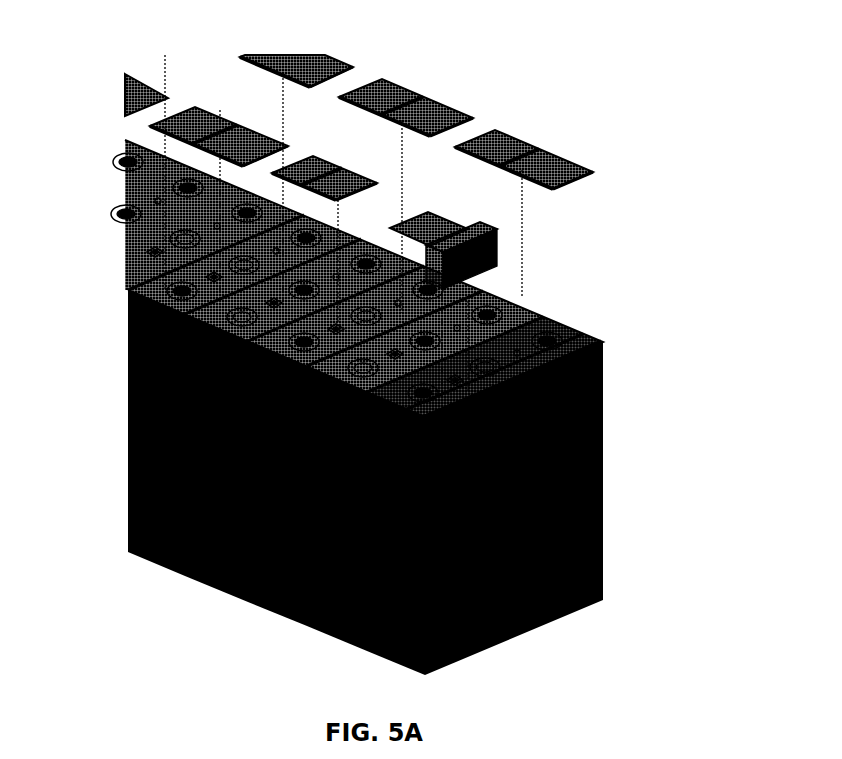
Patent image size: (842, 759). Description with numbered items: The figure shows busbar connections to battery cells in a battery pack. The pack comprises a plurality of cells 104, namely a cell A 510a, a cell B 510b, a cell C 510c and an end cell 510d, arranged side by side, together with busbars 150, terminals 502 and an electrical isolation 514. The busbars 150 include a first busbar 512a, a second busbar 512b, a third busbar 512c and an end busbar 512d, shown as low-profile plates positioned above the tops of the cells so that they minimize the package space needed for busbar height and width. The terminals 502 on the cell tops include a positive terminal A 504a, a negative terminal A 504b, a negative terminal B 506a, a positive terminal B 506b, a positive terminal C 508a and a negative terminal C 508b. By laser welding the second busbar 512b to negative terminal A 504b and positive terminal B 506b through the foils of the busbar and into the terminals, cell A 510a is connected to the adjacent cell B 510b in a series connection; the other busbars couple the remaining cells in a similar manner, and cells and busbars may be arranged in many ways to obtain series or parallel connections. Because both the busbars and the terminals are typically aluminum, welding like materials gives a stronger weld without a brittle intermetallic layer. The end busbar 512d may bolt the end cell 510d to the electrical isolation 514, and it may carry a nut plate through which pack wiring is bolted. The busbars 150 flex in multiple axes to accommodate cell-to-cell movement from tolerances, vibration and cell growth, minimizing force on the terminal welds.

The cells 104 is at (365, 374).
The busbars 150 is at (160, 118).
The terminals 502 is at (128, 296).
The positive terminal A 504a is at (463, 242).
The negative terminal A 504b is at (350, 372).
The negative terminal B 506a is at (435, 280).
The positive terminal B 506b is at (290, 343).
The positive terminal C 508a is at (382, 258).
The negative terminal C 508b is at (228, 314).
The cell A 510a is at (340, 630).
The cell B 510b is at (277, 600).
The cell C 510c is at (190, 588).
The end cell 510d is at (553, 327).
The busbar 1 512a is at (538, 152).
The busbar 2 512b is at (300, 173).
The busbar 3 512c is at (422, 98).
The end busbar 512d is at (497, 283).
The electrical isolation 514 is at (607, 353).